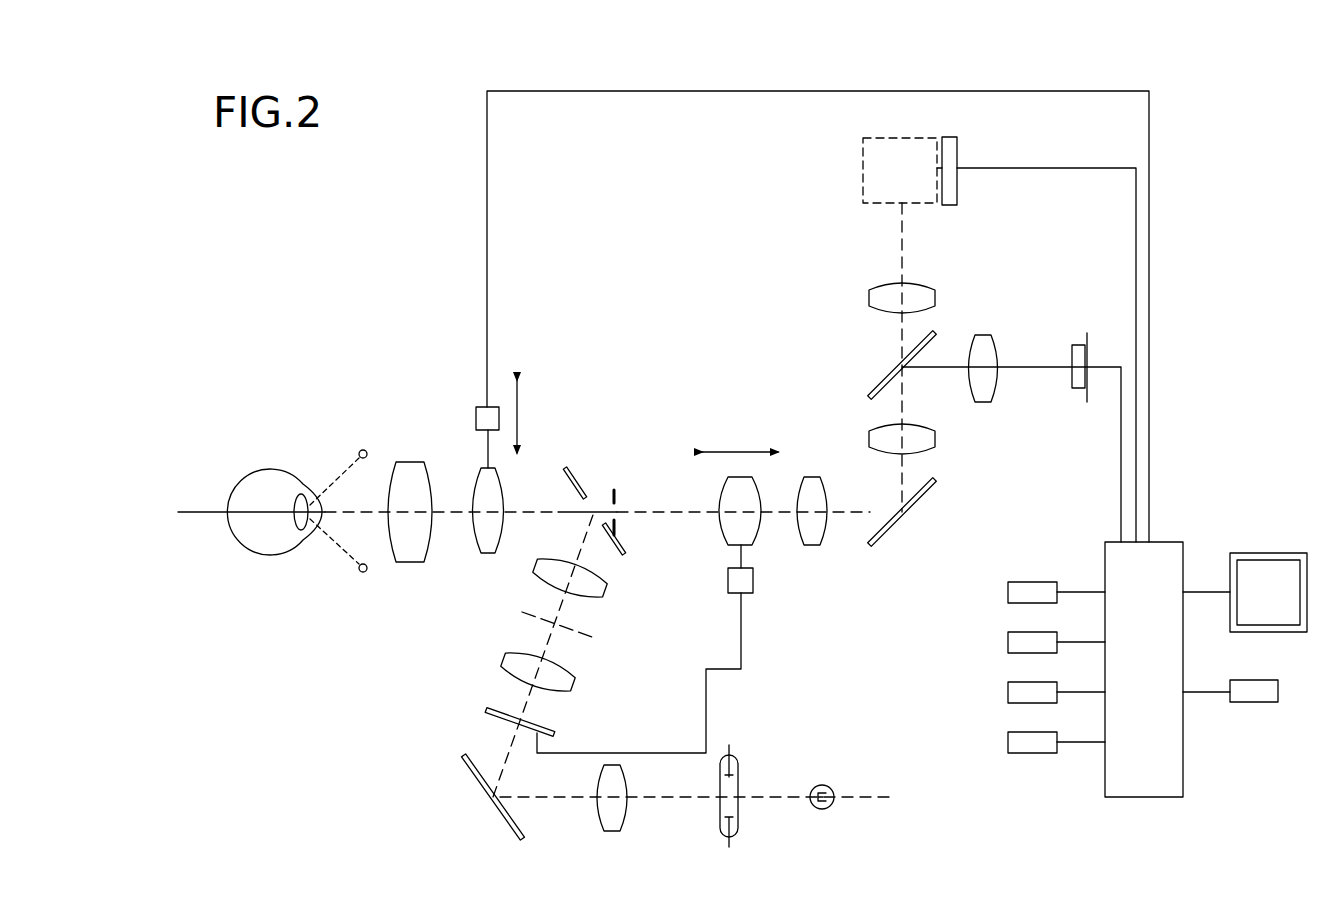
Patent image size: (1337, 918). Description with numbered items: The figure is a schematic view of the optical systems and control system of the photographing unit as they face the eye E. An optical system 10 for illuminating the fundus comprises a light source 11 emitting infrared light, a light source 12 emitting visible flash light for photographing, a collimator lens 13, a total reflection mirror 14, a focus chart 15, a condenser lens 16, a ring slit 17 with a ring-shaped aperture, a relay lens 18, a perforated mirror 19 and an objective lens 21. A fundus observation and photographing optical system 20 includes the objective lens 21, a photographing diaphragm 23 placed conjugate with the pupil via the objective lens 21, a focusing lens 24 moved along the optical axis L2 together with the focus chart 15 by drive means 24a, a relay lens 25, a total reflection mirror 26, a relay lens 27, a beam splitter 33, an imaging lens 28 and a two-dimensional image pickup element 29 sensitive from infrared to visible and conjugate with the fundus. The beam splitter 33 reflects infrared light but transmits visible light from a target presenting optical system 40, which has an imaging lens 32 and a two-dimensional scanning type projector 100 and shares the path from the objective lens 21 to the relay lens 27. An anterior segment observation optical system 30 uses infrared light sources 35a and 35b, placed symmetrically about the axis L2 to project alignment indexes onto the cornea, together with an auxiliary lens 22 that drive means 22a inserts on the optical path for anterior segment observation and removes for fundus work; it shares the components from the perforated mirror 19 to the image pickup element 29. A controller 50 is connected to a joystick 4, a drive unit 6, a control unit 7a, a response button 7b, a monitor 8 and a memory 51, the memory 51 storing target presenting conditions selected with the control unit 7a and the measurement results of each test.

The eye E is at (262, 540).
The anterior segment observation optical system 30 is at (329, 480).
The light source 35a is at (363, 573).
The light source 35b is at (363, 449).
The fundus observation and photographing optical system 20 is at (662, 476).
The objective lens 21 is at (410, 553).
The auxiliary lens 22 is at (472, 490).
The drive means 22a is at (483, 410).
The perforated mirror 19 is at (577, 468).
The photographing diaphragm 23 is at (617, 490).
The optical axis L2 is at (668, 512).
The focusing lens 24 is at (748, 525).
The drive means 24a is at (748, 590).
The relay lens 25 is at (818, 530).
The total reflection mirror 26 is at (905, 530).
The target presenting optical system 40 is at (898, 361).
The relay lens 27 is at (882, 430).
The beam splitter 33 is at (882, 385).
The imaging lens 32 is at (885, 295).
The imaging lens 28 is at (975, 345).
The two-dimensional image pickup element 29 is at (1075, 360).
The two-dimensional scanning type projector 100 is at (863, 158).
The optical system for illuminating the fundus 10 is at (581, 710).
The light source 11 is at (826, 808).
The light source 12 is at (735, 802).
The collimator lens 13 is at (622, 805).
The total reflection mirror 14 is at (490, 783).
The focus chart 15 is at (490, 710).
The condenser lens 16 is at (510, 658).
The ring slit 17 is at (575, 637).
The relay lens 18 is at (583, 580).
The controller 50 is at (1167, 570).
The joystick 4 is at (1012, 592).
The drive unit 6 is at (1012, 642).
The control unit 7a is at (1012, 692).
The response button 7b is at (1012, 742).
The monitor 8 is at (1265, 573).
The memory 51 is at (1273, 692).